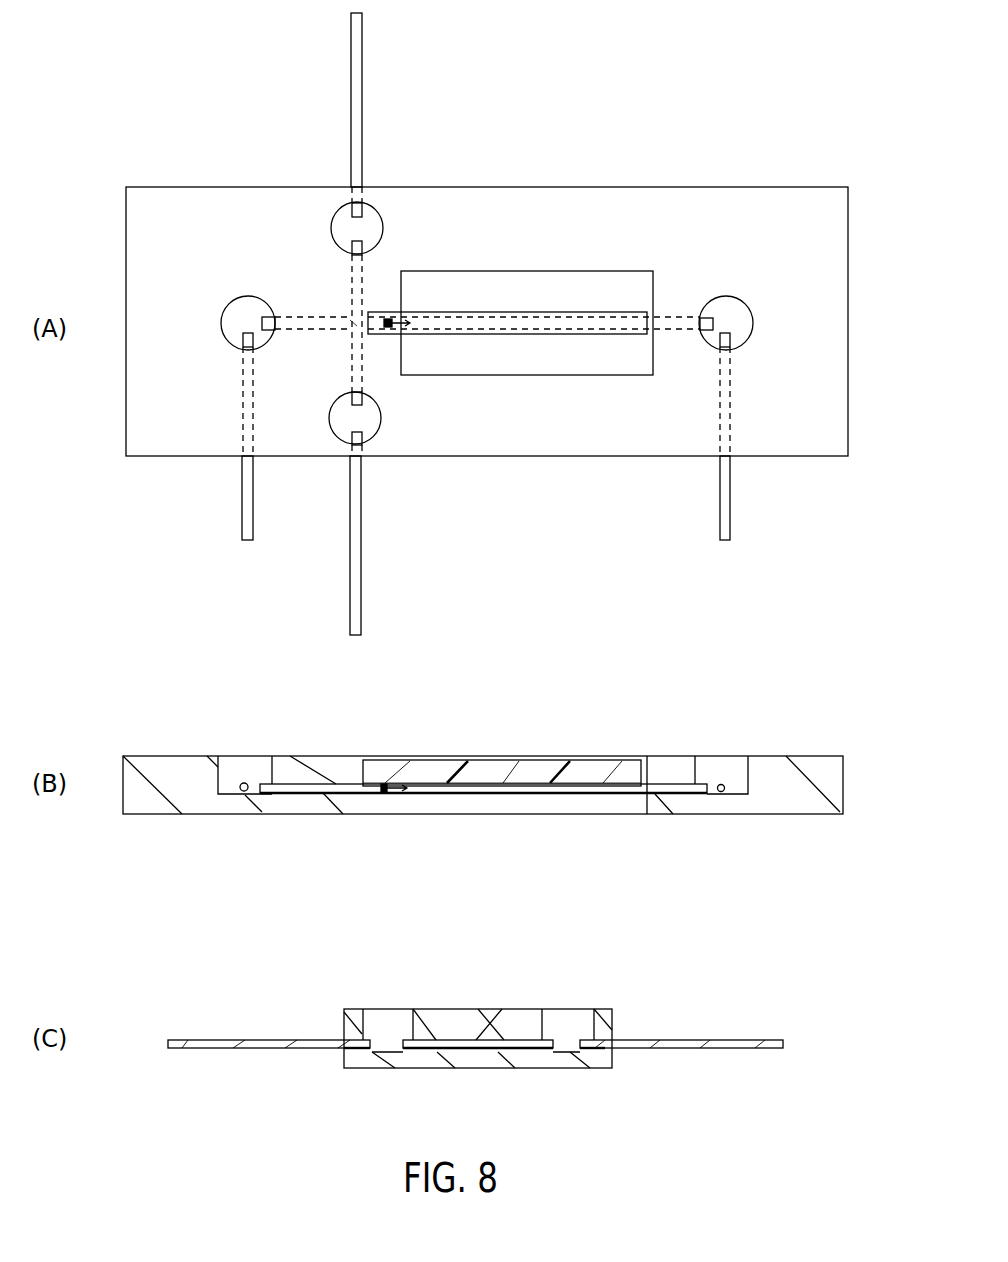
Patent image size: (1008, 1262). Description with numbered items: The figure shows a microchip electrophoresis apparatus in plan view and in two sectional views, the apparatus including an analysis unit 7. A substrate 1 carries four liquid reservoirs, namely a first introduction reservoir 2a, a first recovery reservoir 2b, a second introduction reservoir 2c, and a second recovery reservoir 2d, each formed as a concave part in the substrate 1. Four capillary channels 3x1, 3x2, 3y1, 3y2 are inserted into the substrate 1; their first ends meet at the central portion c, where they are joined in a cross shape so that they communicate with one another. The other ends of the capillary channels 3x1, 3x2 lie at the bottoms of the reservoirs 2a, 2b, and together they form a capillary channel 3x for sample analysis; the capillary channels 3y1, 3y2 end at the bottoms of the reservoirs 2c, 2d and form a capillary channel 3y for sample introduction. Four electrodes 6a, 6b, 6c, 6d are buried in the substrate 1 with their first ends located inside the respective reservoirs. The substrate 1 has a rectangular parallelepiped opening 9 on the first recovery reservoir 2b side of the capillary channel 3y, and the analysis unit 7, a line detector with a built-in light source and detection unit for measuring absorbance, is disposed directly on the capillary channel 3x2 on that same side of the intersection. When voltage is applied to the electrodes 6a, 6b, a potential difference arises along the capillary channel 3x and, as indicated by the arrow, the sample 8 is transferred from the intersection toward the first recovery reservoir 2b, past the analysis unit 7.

The substrate 1 is at (830, 237).
The first introduction reservoir 2a is at (250, 315).
The first recovery reservoir 2b is at (727, 318).
The second introduction reservoir 2c is at (365, 435).
The second recovery reservoir 2d is at (370, 220).
The capillary channel 3x1 is at (318, 320).
The capillary channel 3x2 is at (585, 318).
The capillary channel for sample analysis 3x is at (563, 783).
The capillary channel 3y1 is at (360, 376).
The capillary channel 3y2 is at (358, 272).
The capillary channel for sample introduction 3y is at (488, 1027).
The electrode 6a is at (250, 475).
The electrode 6b is at (727, 485).
The electrode 6c is at (357, 530).
The electrode 6d is at (357, 115).
The analysis unit 7 is at (515, 338).
The sample 8 is at (395, 330).
The opening 9 is at (520, 305).
The central portion c is at (352, 327).